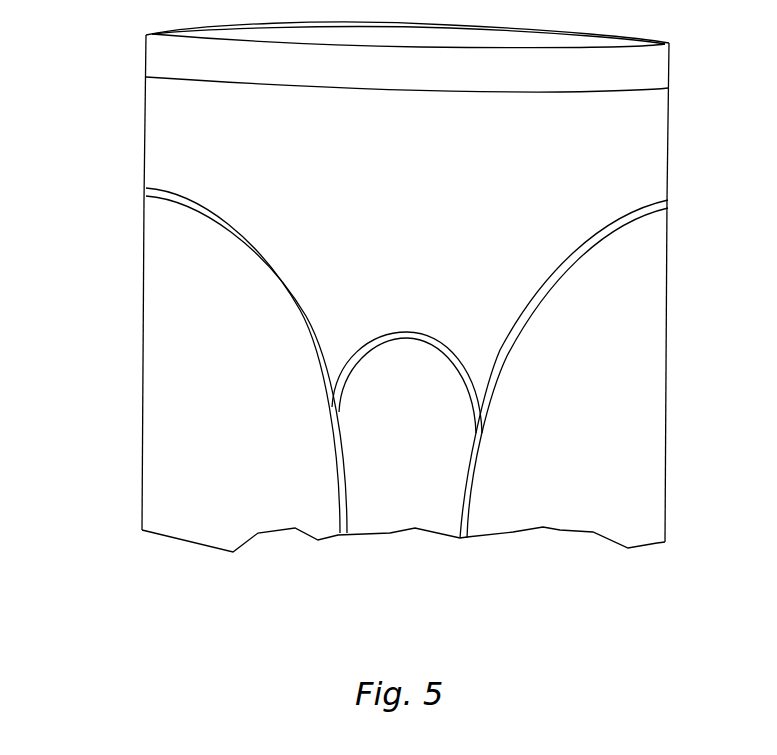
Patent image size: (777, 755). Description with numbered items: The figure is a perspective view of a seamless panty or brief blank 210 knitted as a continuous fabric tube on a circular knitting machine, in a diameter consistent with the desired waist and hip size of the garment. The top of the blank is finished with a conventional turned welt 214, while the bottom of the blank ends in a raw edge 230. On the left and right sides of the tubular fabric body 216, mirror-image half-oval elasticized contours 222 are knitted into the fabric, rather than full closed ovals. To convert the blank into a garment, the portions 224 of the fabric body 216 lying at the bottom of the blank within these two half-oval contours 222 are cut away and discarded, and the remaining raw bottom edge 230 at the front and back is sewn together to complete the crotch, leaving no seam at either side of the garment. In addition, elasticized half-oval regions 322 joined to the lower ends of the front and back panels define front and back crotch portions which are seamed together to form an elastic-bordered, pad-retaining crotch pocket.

The blank 210 is at (92, 120).
The turned welt 214 is at (610, 65).
The fabric body 216 is at (523, 203).
The elasticized contours 222 is at (308, 310).
The portions of the fabric body 224 is at (187, 357).
The raw edge 230 is at (545, 528).
The elasticized half-oval regions 322 is at (368, 348).